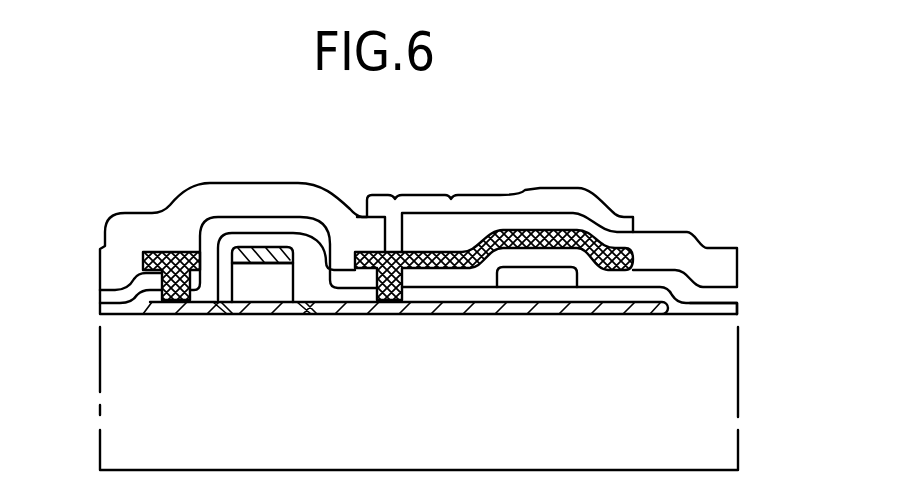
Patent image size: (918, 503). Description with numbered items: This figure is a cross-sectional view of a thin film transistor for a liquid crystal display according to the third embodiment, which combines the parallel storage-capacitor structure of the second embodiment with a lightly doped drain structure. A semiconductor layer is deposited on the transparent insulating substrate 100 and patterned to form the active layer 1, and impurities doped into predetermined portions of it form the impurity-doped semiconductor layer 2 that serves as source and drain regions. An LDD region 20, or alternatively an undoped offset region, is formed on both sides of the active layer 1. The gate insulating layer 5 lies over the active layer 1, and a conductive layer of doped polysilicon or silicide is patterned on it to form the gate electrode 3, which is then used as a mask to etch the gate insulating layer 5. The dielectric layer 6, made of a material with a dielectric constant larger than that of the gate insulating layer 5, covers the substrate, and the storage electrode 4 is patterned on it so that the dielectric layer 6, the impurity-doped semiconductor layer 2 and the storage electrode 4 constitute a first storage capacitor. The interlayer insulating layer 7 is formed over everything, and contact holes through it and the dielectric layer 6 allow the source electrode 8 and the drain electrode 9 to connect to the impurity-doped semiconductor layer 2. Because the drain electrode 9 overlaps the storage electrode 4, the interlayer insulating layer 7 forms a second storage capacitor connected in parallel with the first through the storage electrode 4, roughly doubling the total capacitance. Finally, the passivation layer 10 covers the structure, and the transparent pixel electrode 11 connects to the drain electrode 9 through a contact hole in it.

The active layer 1 is at (283, 302).
The impurity-doped semiconductor layer 2 is at (469, 305).
The gate electrode 3 is at (244, 246).
The storage electrode 4 is at (534, 277).
The gate insulating layer 5 is at (255, 292).
The dielectric layer 6 is at (717, 310).
The interlayer insulating layer 7 is at (279, 224).
The source electrode 8 is at (172, 315).
The drain electrode 9 is at (388, 313).
The passivation layer 10 is at (717, 272).
The pixel electrode 11 is at (502, 203).
The LDD region 20 is at (308, 316).
The transparent insulating substrate 100 is at (717, 400).